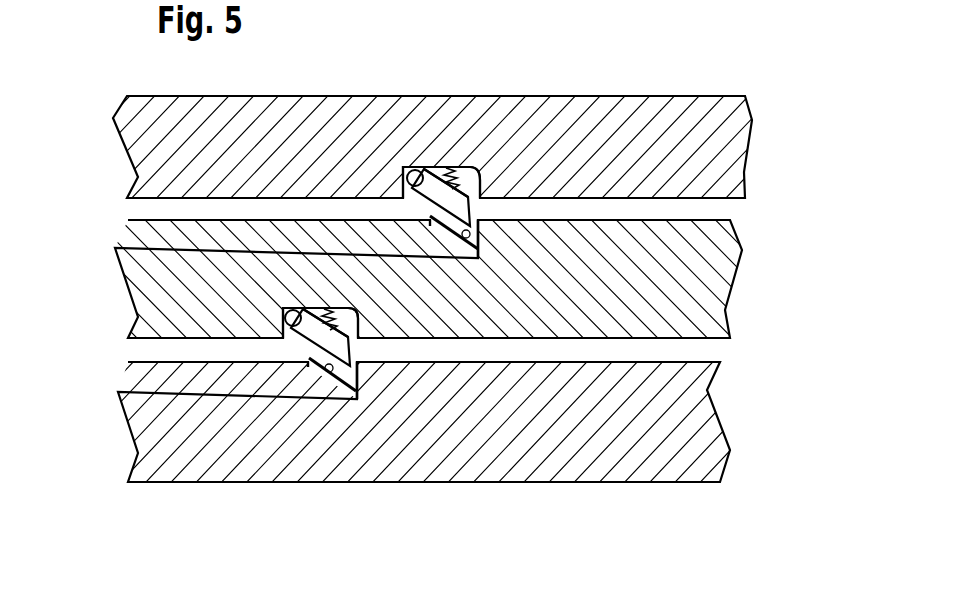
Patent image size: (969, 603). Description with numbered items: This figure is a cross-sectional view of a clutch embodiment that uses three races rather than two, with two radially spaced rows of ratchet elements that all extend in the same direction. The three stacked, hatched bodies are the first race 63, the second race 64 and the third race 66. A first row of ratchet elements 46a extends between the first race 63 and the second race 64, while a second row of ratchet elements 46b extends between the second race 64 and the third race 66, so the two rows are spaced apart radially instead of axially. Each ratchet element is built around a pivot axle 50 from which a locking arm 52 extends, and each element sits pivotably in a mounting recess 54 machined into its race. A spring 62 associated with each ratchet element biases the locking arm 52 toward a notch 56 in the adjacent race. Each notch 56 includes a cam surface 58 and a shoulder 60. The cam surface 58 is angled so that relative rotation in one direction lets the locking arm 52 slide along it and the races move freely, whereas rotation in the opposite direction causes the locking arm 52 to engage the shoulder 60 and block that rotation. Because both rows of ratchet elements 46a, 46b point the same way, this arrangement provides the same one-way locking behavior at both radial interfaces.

The first row of ratchet elements 46a is at (477, 156).
The second row of ratchet elements 46b is at (303, 382).
The pivot axle 50 is at (413, 170).
The locking arm 52 is at (442, 194).
The mounting recess 54 is at (478, 177).
The notch 56 is at (492, 238).
The cam surface 58 is at (333, 376).
The shoulder 60 is at (480, 248).
The spring 62 is at (434, 166).
The first race 63 is at (725, 146).
The second race 64 is at (685, 277).
The third race 66 is at (692, 403).